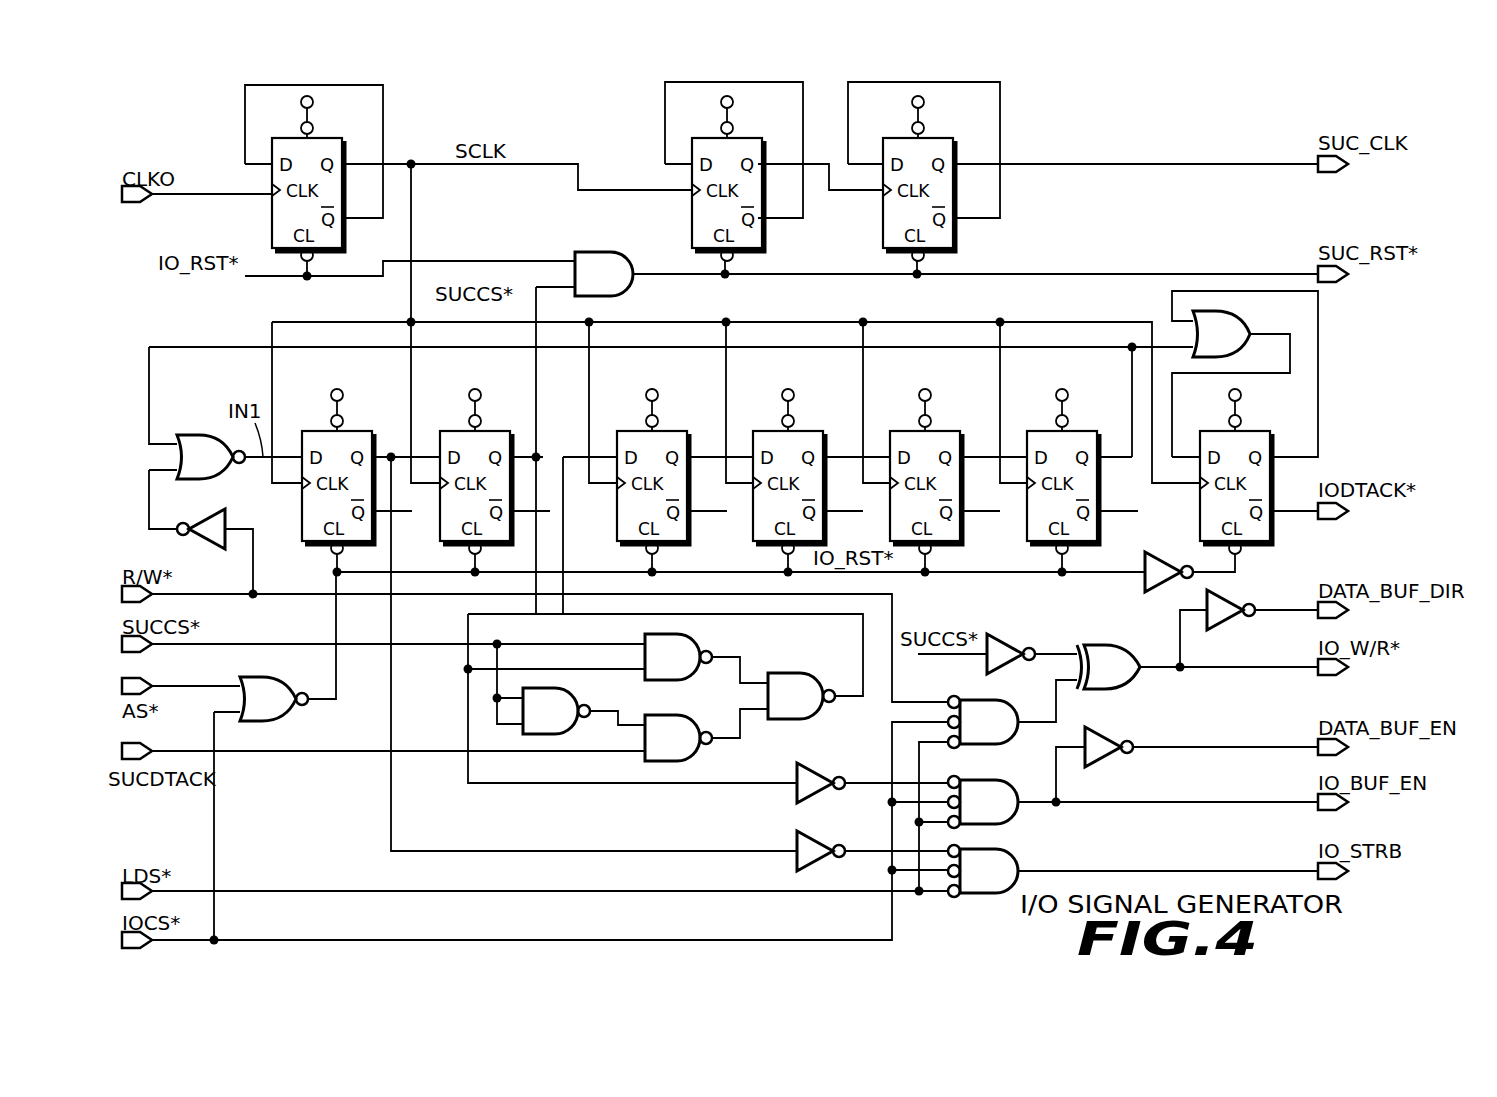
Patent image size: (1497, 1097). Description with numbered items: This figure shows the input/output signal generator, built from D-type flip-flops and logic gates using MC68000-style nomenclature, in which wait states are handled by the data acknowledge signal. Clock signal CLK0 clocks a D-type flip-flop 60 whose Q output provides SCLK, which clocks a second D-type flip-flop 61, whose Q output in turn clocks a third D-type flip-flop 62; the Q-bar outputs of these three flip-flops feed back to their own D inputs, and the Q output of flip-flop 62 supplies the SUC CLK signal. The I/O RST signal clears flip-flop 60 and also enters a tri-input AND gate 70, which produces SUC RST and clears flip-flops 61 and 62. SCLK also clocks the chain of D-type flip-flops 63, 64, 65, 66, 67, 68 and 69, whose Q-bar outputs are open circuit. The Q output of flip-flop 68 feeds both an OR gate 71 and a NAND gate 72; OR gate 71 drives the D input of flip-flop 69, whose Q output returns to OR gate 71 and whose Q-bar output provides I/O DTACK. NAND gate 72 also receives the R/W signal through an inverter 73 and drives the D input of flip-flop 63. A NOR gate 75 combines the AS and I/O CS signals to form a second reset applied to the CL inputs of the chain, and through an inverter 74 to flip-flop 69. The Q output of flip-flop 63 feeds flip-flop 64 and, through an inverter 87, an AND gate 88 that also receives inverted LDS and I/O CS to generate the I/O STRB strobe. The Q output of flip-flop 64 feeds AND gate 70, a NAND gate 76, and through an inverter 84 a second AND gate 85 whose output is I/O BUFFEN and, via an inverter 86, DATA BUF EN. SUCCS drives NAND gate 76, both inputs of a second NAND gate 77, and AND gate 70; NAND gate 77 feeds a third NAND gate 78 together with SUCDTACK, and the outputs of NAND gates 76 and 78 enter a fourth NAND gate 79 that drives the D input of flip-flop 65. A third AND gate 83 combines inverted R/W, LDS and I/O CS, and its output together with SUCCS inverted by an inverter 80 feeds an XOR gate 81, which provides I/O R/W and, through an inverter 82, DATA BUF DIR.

The D-type flip-flop 60 is at (327, 138).
The second D-type flip-flop 61 is at (747, 138).
The third D-type flip-flop 62 is at (938, 138).
The D-type flip-flop 63 is at (357, 431).
The D-type flip-flop 64 is at (495, 431).
The D-type flip-flop 65 is at (672, 431).
The D-type flip-flop 66 is at (808, 431).
The D-type flip-flop 67 is at (945, 431).
The D-type flip-flop 68 is at (1082, 431).
The D-type flip-flop 69 is at (1255, 431).
The tri-input AND gate 70 is at (612, 286).
The OR gate 71 is at (1229, 346).
The NAND gate 72 is at (212, 469).
The inverter 73 is at (227, 512).
The inverter 74 is at (1152, 592).
The NOR gate 75 is at (275, 711).
The NAND gate 76 is at (681, 669).
The second NAND gate 77 is at (559, 723).
The third NAND gate 78 is at (681, 750).
The fourth NAND gate 79 is at (804, 708).
The inverter 80 is at (998, 634).
The XOR gate 81 is at (1119, 679).
The inverter 82 is at (1225, 628).
The third AND gate 83 is at (995, 734).
The inverter 84 is at (812, 768).
The second AND gate 85 is at (995, 814).
The inverter 86 is at (1110, 765).
The inverter 87 is at (812, 836).
The AND gate 88 is at (995, 883).